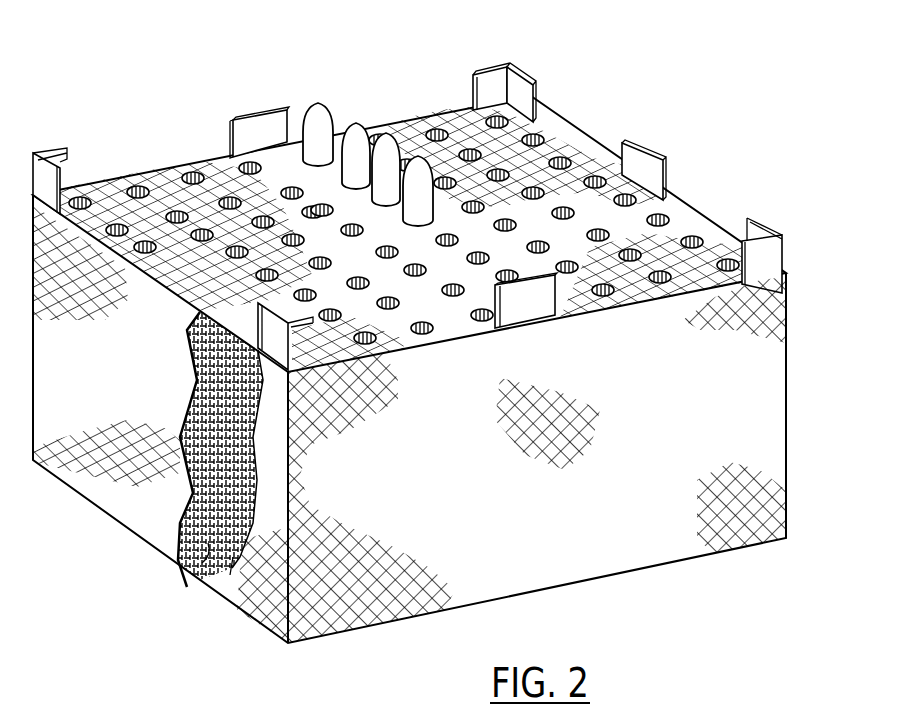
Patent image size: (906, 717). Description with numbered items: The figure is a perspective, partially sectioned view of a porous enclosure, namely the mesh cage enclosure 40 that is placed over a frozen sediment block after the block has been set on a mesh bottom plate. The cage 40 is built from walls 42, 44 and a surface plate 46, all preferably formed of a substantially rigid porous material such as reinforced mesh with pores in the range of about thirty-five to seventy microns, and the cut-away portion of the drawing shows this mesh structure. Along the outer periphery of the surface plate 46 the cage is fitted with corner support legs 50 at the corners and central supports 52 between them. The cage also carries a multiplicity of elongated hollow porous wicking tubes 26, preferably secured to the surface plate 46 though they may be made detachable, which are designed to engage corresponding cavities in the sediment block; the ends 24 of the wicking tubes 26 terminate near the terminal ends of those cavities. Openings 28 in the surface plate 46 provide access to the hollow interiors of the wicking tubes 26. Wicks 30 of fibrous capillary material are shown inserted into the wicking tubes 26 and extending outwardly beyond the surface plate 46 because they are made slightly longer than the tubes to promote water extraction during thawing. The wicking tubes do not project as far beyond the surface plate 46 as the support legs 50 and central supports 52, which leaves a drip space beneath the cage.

The ends of the wicking tubes 24 is at (232, 565).
The wicking tubes 26 is at (190, 502).
The openings 28 is at (690, 234).
The wicks 30 is at (380, 136).
The mesh cage enclosure 40 is at (788, 375).
The wall 42 is at (439, 475).
The wall 44 is at (112, 390).
The surface plate 46 is at (228, 167).
The corner support legs 50 is at (510, 75).
The central supports 52 is at (650, 152).